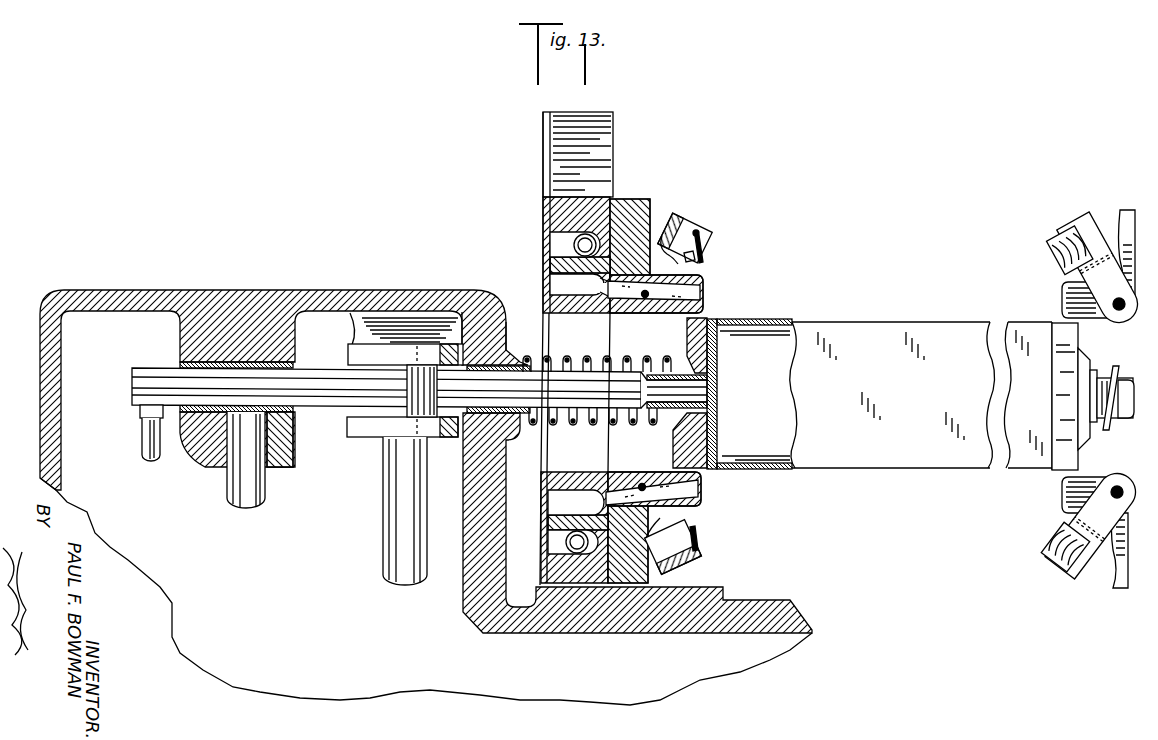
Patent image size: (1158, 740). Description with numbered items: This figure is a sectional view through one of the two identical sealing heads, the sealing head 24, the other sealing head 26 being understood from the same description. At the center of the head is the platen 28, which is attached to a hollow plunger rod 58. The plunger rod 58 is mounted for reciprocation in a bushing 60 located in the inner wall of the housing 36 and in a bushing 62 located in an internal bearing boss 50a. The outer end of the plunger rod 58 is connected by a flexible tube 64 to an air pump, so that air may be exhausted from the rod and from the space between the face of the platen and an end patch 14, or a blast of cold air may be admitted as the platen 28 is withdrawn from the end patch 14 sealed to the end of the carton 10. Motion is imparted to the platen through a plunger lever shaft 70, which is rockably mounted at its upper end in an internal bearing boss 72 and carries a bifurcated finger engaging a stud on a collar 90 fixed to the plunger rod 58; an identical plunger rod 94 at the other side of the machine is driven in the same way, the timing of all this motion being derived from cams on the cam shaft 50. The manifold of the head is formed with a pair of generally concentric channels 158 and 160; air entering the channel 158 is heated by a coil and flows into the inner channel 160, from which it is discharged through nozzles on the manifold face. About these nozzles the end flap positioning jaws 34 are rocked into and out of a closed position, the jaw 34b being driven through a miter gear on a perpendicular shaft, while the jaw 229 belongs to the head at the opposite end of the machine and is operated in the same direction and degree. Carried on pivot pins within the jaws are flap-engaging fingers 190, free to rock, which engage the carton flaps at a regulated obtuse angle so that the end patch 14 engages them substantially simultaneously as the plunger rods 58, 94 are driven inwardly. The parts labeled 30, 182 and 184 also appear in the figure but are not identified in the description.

The carton 10 is at (760, 323).
The end patch 14 is at (716, 378).
The sealing head 24 is at (613, 148).
The sealing head 26 is at (1082, 383).
The platen 28 is at (686, 342).
The flange 30 is at (1068, 342).
The end flap positioning jaws 34 is at (688, 220).
The jaw 34b is at (702, 557).
The housing 36 is at (279, 291).
The cam shaft 50 is at (259, 488).
The internal bearing boss 50a is at (287, 438).
The plunger rod 58 is at (573, 382).
The bushing 60 is at (505, 340).
The bushing 62 is at (183, 363).
The flexible tube 64 is at (148, 430).
The plunger lever shaft 70 is at (386, 529).
The internal bearing boss 72 is at (358, 356).
The collar 90 is at (408, 388).
The plunger rod 94 is at (1125, 380).
The channel 158 is at (553, 240).
The inner channel 160 is at (553, 285).
The spring 182 is at (660, 238).
The arm 184 is at (698, 295).
The flap-engaging fingers 190 is at (703, 261).
The jaw 229 is at (1076, 236).